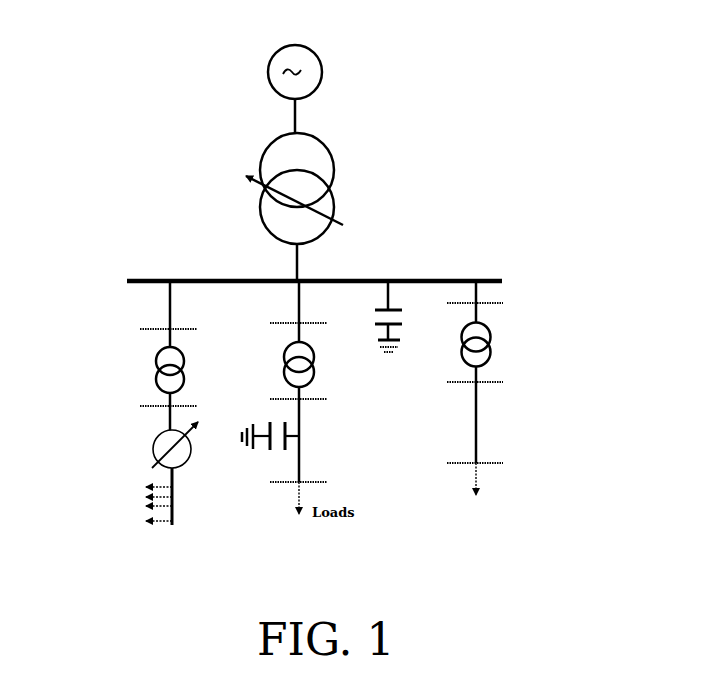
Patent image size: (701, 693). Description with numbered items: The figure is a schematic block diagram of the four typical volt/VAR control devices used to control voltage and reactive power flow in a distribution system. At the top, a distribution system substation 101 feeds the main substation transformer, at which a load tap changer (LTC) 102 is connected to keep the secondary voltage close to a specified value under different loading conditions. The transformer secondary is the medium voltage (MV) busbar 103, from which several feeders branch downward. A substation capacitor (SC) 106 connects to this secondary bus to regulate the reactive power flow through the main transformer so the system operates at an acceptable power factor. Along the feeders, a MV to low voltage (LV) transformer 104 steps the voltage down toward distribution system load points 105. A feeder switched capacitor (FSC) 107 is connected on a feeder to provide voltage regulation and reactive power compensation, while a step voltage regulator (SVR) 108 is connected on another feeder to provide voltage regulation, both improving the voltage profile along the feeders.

The distribution system substation 101 is at (313, 48).
The load tap changer (LTC) 102 is at (333, 162).
The medium voltage (MV) busbar 103 is at (497, 272).
The MV to low voltage (LV) transformer 104 is at (555, 347).
The distribution system load points 105 is at (490, 483).
The substation capacitor (SC) 106 is at (390, 308).
The feeder switched capacitor (FSC) 107 is at (270, 457).
The step voltage regulator (SVR) 108 is at (145, 453).